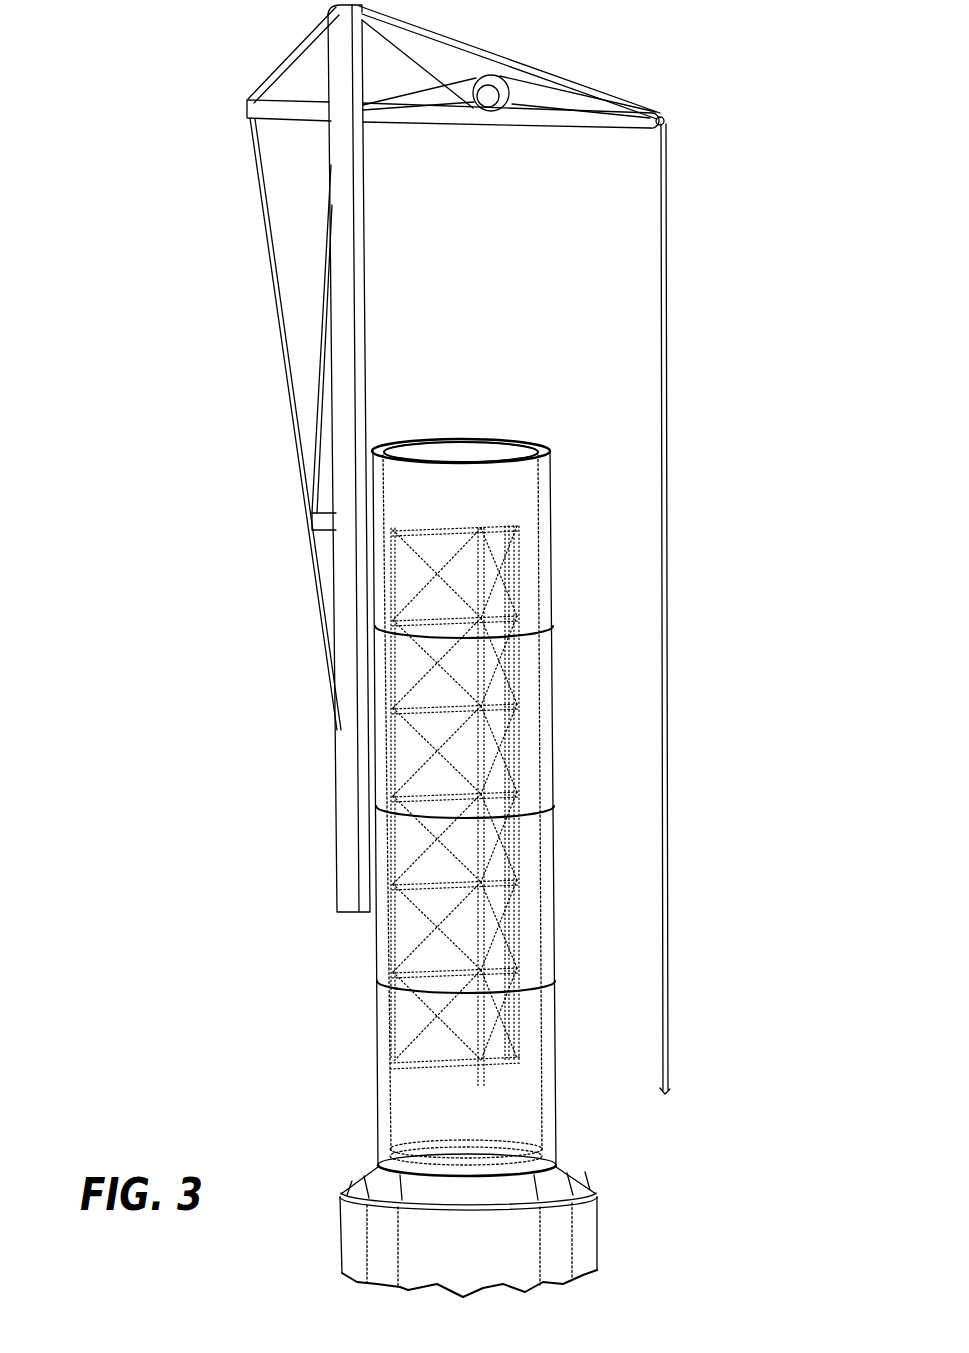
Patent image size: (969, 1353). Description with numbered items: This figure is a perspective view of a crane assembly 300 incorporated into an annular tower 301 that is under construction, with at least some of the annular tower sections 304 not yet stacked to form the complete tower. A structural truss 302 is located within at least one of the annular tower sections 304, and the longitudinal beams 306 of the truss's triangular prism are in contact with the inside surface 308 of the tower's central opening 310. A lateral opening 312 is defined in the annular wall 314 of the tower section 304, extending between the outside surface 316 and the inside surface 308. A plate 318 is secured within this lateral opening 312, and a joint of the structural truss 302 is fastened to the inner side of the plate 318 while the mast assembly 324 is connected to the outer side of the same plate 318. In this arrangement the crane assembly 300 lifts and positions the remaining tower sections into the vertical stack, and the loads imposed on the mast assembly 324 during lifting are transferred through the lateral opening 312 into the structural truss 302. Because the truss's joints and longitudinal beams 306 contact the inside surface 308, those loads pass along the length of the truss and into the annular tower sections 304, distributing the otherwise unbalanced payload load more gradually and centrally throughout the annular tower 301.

The crane assembly 300 is at (145, 147).
The annular tower 301 is at (330, 994).
The structural truss 302 is at (512, 611).
The annular tower section 304 is at (530, 773).
The longitudinal beams 306 is at (552, 580).
The inside surface 308 is at (505, 450).
The central opening 310 is at (450, 410).
The lateral opening 312 is at (380, 551).
The annular wall 314 is at (376, 440).
The outside surface 316 is at (378, 1096).
The plate 318 is at (380, 731).
The mast assembly 324 is at (255, 262).